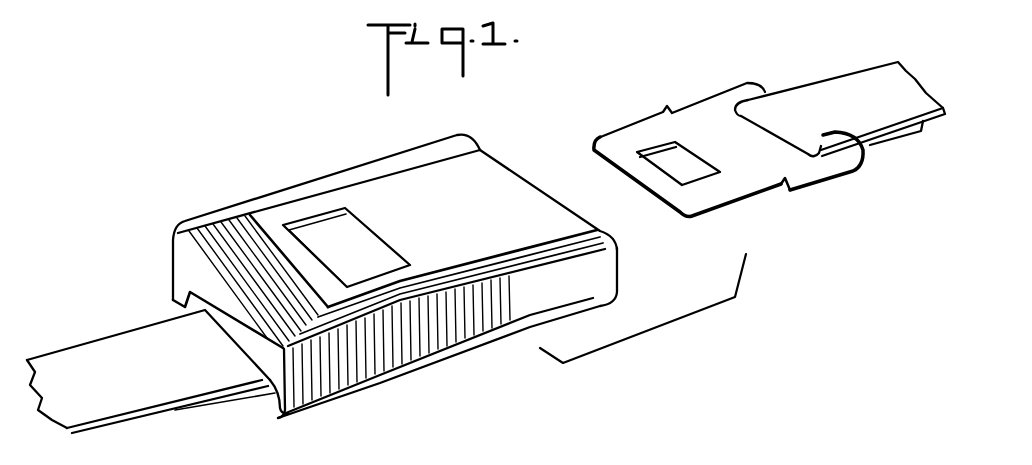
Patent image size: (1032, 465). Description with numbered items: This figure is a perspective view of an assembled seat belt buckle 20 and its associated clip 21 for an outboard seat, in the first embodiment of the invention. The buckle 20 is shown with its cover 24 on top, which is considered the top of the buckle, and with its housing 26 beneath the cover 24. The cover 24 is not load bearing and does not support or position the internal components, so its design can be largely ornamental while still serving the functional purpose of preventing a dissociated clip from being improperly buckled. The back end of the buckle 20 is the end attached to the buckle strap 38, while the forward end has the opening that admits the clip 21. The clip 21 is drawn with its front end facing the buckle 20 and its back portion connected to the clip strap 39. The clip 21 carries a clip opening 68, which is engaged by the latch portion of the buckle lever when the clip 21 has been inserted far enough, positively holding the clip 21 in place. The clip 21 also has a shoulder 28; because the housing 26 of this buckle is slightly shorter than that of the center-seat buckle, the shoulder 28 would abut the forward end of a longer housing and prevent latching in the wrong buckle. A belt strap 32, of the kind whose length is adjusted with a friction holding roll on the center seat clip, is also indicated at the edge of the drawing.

The buckle 20 is at (304, 166).
The cover 24 is at (500, 173).
The housing 26 is at (425, 338).
The buckle strap 38 is at (128, 403).
The clip 21 is at (743, 208).
The shoulder 28 is at (786, 188).
The clip opening 68 is at (657, 152).
The clip strap 39 is at (838, 80).
The belt strap 32 is at (893, 459).